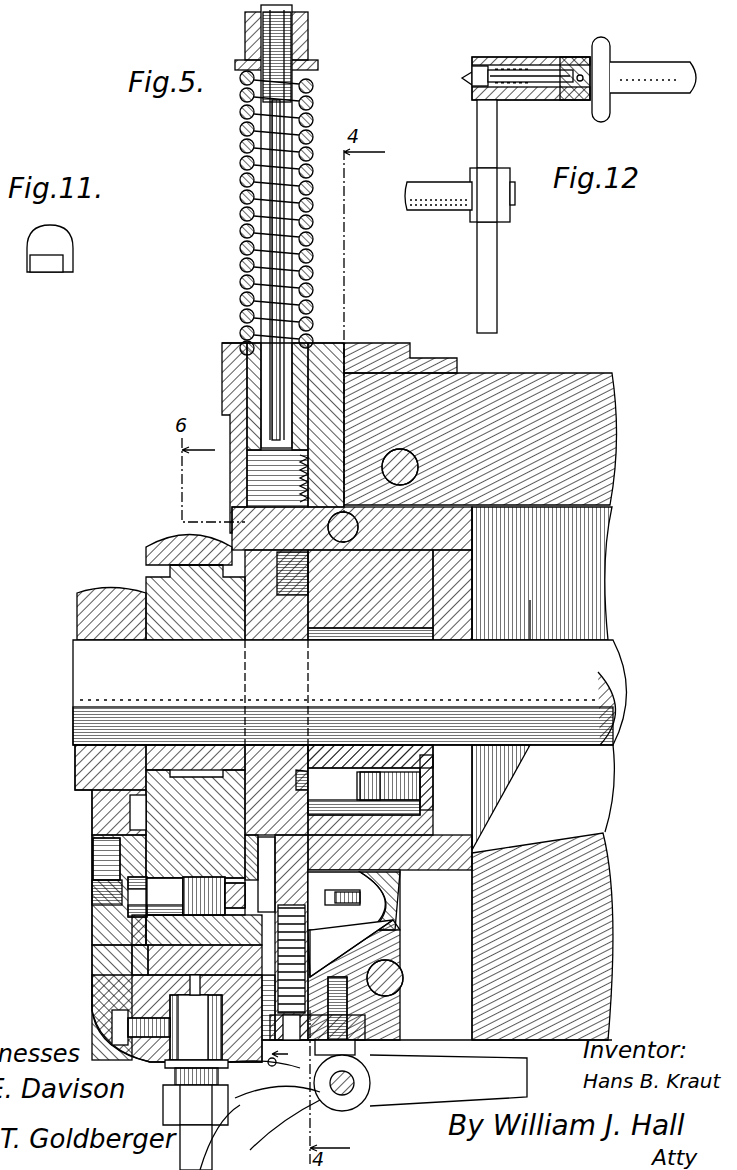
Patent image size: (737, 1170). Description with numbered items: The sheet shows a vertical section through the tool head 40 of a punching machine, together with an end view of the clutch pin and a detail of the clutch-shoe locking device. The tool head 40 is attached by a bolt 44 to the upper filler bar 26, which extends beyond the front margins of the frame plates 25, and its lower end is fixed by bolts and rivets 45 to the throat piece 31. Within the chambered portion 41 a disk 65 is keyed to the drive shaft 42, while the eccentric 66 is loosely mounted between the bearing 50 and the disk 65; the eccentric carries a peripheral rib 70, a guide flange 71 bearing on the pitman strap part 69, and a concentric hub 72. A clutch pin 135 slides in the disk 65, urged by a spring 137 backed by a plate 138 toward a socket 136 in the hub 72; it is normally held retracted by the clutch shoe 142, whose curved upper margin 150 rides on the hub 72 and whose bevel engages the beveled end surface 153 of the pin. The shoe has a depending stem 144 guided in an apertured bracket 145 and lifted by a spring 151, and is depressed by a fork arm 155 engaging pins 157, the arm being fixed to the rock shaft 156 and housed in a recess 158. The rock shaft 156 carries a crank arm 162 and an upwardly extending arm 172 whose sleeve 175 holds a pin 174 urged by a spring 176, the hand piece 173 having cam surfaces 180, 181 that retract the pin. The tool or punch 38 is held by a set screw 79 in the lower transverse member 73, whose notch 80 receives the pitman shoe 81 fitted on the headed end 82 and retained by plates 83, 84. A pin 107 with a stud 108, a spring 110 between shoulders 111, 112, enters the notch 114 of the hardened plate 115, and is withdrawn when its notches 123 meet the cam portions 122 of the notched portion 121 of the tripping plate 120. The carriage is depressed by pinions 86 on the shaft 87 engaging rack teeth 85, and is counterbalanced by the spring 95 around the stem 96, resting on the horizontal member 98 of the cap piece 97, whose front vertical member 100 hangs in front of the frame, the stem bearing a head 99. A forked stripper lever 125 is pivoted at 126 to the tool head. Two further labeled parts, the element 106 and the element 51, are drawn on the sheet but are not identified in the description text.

In FIG. 5, the head 99 is at (308, 42).
In FIG. 5, the stem 96 is at (268, 185).
In FIG. 5, the spiral expansively acting spring 95 is at (250, 250).
In FIG. 5, the angle shaped cap piece 97 is at (354, 343).
In FIG. 5, the horizontal member 98 is at (398, 343).
In FIG. 5, the front vertical member 100 is at (222, 382).
In FIG. 5, the upper filler bar 26 is at (553, 373).
In FIG. 5, the bolt 44 is at (400, 449).
In FIG. 5, the rack teeth 85 is at (277, 478).
In FIG. 5, the horizontal transverse shaft 87 is at (347, 515).
In FIG. 5, the concentric guide flange 71 is at (238, 533).
In FIG. 5, the peripheral rib 70 is at (180, 565).
In FIG. 5, the pitman strap part 69 is at (150, 552).
In FIG. 5, the eccentric 66 is at (146, 580).
In FIG. 5, the bearing 50 is at (77, 625).
In FIG. 5, the pinions 86 is at (292, 573).
In FIG. 5, the disk 65 is at (420, 570).
In FIG. 5, the tool head 40 is at (493, 550).
In FIG. 5, the chambered-like portion 41 is at (472, 618).
In FIG. 5, the drive shaft 42 is at (560, 640).
In FIG. 5, the concentric hub 72 is at (282, 645).
In FIG. 5, the curved upper margin 150 is at (296, 770).
In FIG. 5, the frame plates 25 is at (608, 793).
In FIG. 5, the throat piece 31 is at (606, 840).
In FIG. 5, the clutch shoe 142 is at (370, 790).
In FIG. 5, the clutch pin 135 is at (348, 786).
In FIG. 11, the clutch pin 135 is at (68, 242).
In FIG. 5, the spiral expansively acting spring 137 is at (405, 772).
In FIG. 5, the plate 138 is at (430, 760).
In FIG. 5, the socket 136 is at (330, 745).
In FIG. 5, the block 106 is at (300, 745).
In FIG. 5, the tripping plate 120 is at (390, 852).
In FIG. 5, the housing 51 is at (92, 978).
In FIG. 5, the front plate 83 is at (93, 850).
In FIG. 5, the notch 114 is at (128, 890).
In FIG. 5, the hardened plate 115 is at (95, 905).
In FIG. 5, the pin 107 is at (165, 895).
In FIG. 5, the stud 108 is at (162, 878).
In FIG. 5, the spiral expansively acting spring 110 is at (207, 877).
In FIG. 5, the interior shoulder 112 is at (233, 883).
In FIG. 5, the notched portion 121 is at (275, 880).
In FIG. 5, the shoulder 111 is at (204, 930).
In FIG. 5, the cam portions 122 is at (189, 930).
In FIG. 5, the lower headed end 82 is at (132, 935).
In FIG. 5, the rear plate 84 is at (205, 960).
In FIG. 5, the pitman shoe 81 is at (148, 962).
In FIG. 5, the notch 80 is at (132, 985).
In FIG. 5, the depending stem 144 is at (222, 1008).
In FIG. 5, the notches 123 is at (262, 1000).
In FIG. 5, the set screw 79 is at (112, 1027).
In FIG. 5, the lower transverse member 73 is at (135, 1060).
In FIG. 5, the tool or punch 38 is at (212, 1142).
In FIG. 5, the recess 158 is at (313, 937).
In FIG. 5, the fork arm 155 is at (410, 938).
In FIG. 5, the pins 157 is at (335, 890).
In FIG. 5, the horizontal rock shaft 156 is at (380, 898).
In FIG. 12, the horizontal rock shaft 156 is at (428, 182).
In FIG. 5, the bolts and rivets 45 is at (403, 980).
In FIG. 5, the spiral expansively acting spring 151 is at (328, 980).
In FIG. 5, the forked stripper lever 125 is at (363, 1112).
In FIG. 5, the pivot 126 is at (354, 1085).
In FIG. 5, the apertured bracket 145 is at (305, 1068).
In FIG. 11, the beveled end surface 153 is at (42, 272).
In FIG. 12, the sleeve 175 is at (483, 57).
In FIG. 12, the spring 176 is at (520, 65).
In FIG. 12, the pin 174 is at (545, 76).
In FIG. 12, the cam surface 180 is at (555, 100).
In FIG. 12, the cam surface 181 is at (610, 22).
In FIG. 12, the hand piece 173 is at (653, 62).
In FIG. 12, the upwardly extending arm 172 is at (498, 125).
In FIG. 12, the crank arm 162 is at (498, 258).